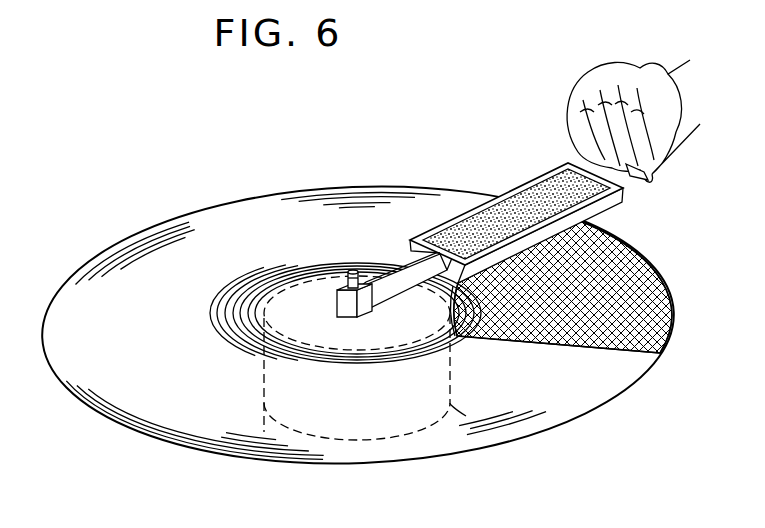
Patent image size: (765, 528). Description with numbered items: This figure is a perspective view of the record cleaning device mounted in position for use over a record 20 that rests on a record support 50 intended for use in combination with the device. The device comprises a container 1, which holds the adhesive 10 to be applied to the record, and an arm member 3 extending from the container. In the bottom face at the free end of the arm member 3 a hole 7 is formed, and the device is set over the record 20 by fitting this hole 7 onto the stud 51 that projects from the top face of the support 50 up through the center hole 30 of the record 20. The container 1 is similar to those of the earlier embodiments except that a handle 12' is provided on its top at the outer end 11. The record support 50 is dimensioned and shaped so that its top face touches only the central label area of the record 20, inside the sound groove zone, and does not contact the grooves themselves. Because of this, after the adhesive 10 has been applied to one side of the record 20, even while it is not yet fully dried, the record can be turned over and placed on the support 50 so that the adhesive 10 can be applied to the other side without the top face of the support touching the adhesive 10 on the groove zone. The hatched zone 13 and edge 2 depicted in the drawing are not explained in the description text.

The container 1 is at (463, 217).
The edge of mesh 2 is at (460, 320).
The arm member 3 is at (395, 257).
The hole 7 is at (335, 312).
The adhesive 10 is at (487, 228).
The outer end 11 is at (580, 168).
The handle 12' is at (658, 181).
The mesh screen 13 is at (512, 212).
The record 20 is at (598, 373).
The center hole 30 is at (368, 350).
The record support 50 is at (472, 420).
The stud 51 is at (348, 270).